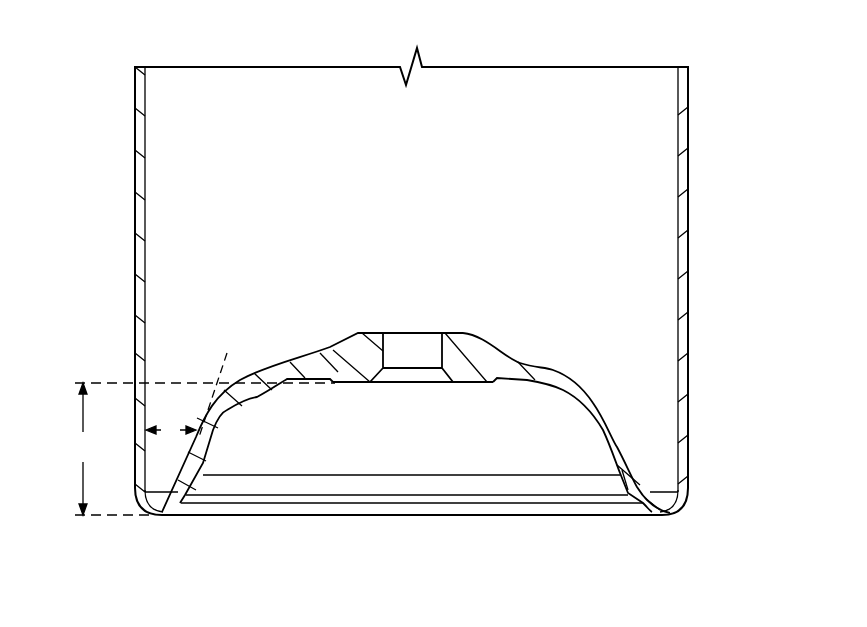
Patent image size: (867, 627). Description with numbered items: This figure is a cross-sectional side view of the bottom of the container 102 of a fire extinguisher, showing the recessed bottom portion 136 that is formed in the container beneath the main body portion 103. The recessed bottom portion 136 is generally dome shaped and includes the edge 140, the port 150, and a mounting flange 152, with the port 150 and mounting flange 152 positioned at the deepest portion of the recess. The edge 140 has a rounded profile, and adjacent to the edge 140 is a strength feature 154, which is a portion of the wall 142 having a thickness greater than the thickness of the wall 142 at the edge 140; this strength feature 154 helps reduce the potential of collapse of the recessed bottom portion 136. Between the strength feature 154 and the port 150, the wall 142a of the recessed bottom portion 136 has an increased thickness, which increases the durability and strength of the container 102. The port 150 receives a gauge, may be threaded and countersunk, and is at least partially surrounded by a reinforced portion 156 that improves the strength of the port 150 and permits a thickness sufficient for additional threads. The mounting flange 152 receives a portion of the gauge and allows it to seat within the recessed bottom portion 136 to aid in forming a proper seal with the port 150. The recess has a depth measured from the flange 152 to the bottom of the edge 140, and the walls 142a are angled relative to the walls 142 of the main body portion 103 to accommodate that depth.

The container 102 is at (99, 52).
The main body portion 103 is at (701, 94).
The wall 142 is at (684, 215).
The edge 140 is at (683, 502).
The recessed bottom portion 136 is at (700, 394).
The wall of the recessed bottom portion 142a is at (580, 392).
The port 150 is at (412, 345).
The mounting flange 152 is at (355, 386).
The reinforced portion 156 is at (327, 357).
The strength feature 154 is at (631, 480).